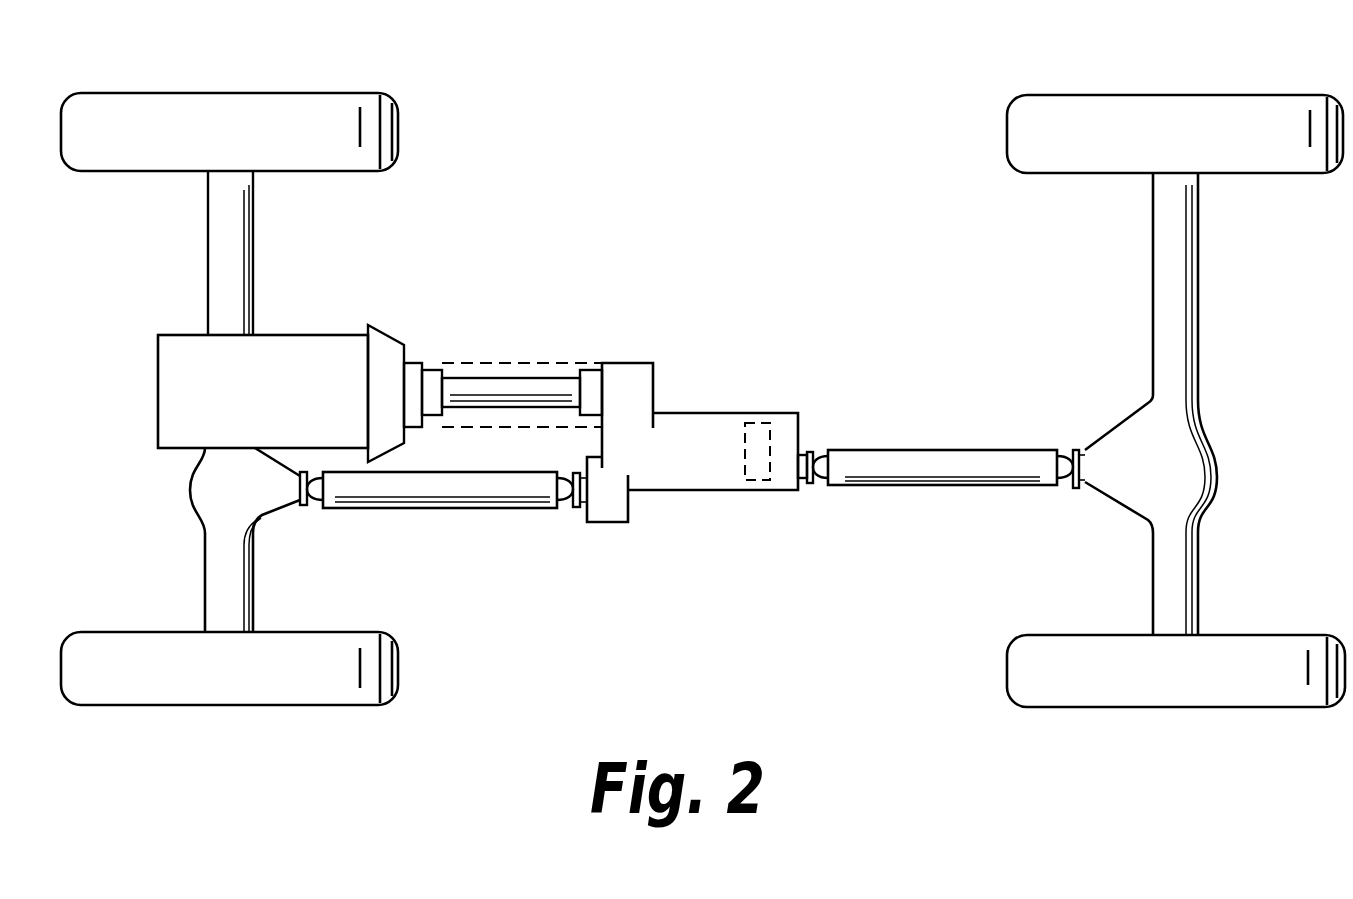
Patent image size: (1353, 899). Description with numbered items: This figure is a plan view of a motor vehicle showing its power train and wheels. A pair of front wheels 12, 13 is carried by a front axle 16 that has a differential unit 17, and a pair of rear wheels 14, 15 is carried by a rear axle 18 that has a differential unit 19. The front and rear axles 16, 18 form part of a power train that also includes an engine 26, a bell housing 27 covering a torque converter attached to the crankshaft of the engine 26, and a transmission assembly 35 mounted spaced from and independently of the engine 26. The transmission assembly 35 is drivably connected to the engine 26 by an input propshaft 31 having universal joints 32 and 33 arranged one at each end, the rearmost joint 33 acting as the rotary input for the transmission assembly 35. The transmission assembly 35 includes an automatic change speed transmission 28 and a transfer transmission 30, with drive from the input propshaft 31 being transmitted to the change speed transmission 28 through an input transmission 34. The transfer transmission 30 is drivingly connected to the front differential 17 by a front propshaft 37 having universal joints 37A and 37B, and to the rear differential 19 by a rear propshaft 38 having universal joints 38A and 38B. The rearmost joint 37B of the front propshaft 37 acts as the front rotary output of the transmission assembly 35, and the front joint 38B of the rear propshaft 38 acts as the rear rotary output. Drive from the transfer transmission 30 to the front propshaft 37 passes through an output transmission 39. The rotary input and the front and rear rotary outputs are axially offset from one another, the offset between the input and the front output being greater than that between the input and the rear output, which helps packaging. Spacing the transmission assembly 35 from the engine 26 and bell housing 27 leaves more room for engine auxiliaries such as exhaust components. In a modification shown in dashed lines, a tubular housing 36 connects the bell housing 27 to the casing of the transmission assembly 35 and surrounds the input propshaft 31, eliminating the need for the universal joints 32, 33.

The front wheel 12 is at (224, 685).
The front wheel 13 is at (228, 110).
The rear wheel 14 is at (1170, 686).
The rear wheel 15 is at (1162, 110).
The front axle 16 is at (205, 573).
The differential unit 17 is at (213, 492).
The rear axle 18 is at (1173, 280).
The differential unit 19 is at (1185, 482).
The engine 26 is at (282, 399).
The bell housing 27 is at (388, 340).
The automatic change speed transmission 28 is at (688, 423).
The transfer transmission 30 is at (758, 433).
The input propshaft 31 is at (512, 387).
The universal joint 32 is at (432, 383).
The universal joint 33 is at (588, 380).
The input transmission 34 is at (623, 380).
The transmission assembly 35 is at (689, 438).
The tubular housing 36 is at (473, 360).
The front propshaft 37 is at (447, 490).
The universal joint 37A is at (313, 505).
The universal joint 37B is at (567, 507).
The rear propshaft 38 is at (963, 473).
The universal joint 38A is at (1067, 490).
The universal joint 38B is at (815, 492).
The output transmission 39 is at (610, 512).